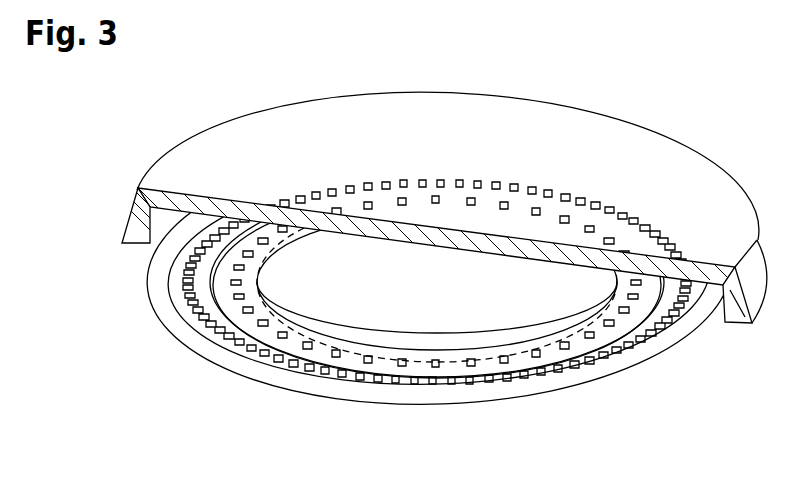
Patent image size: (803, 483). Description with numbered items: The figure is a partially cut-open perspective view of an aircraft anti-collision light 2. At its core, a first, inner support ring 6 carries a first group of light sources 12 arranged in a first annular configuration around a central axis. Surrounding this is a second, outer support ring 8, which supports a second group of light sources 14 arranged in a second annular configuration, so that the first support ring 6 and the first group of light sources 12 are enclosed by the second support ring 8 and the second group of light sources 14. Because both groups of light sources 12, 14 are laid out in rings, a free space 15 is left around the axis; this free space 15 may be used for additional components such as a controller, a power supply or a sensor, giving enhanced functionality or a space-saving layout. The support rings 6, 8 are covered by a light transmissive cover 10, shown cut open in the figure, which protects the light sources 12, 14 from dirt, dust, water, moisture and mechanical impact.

The aircraft anti-collision light 2 is at (451, 240).
The first support ring 6 is at (483, 327).
The second support ring 8 is at (233, 375).
The light transmissive cover 10 is at (203, 140).
The first group of light sources 12 is at (532, 350).
The second group of light sources 14 is at (293, 367).
The free space 15 is at (443, 305).